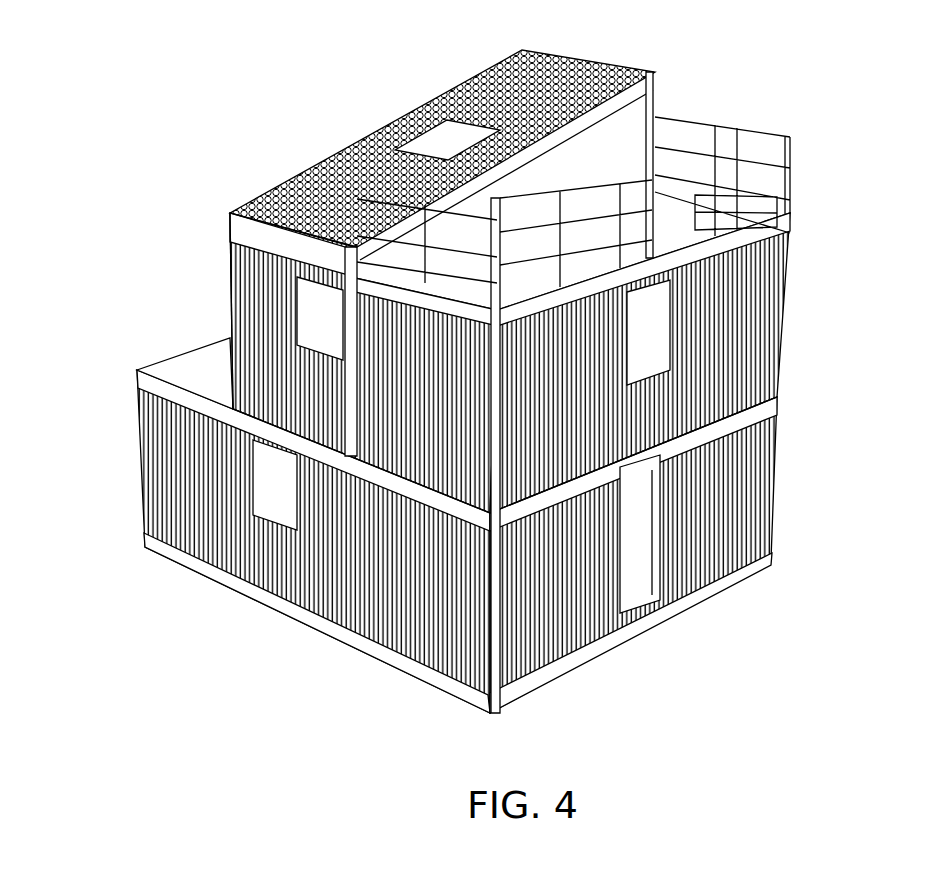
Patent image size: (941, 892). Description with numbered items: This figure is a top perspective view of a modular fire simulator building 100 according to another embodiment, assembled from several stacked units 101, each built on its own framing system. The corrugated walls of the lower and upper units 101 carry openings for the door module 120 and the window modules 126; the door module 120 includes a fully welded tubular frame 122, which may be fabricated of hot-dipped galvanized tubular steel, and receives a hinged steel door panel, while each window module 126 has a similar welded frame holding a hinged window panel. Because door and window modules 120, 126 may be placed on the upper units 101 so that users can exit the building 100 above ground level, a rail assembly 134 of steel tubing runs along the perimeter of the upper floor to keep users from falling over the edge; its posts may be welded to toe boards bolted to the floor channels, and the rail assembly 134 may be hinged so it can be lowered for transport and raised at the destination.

The modular fire simulator building 100 is at (852, 248).
The unit 101 is at (464, 477).
The door module 120 is at (657, 603).
The frame 122 is at (647, 580).
The window module 126 is at (273, 490).
The rail assembly 134 is at (717, 124).